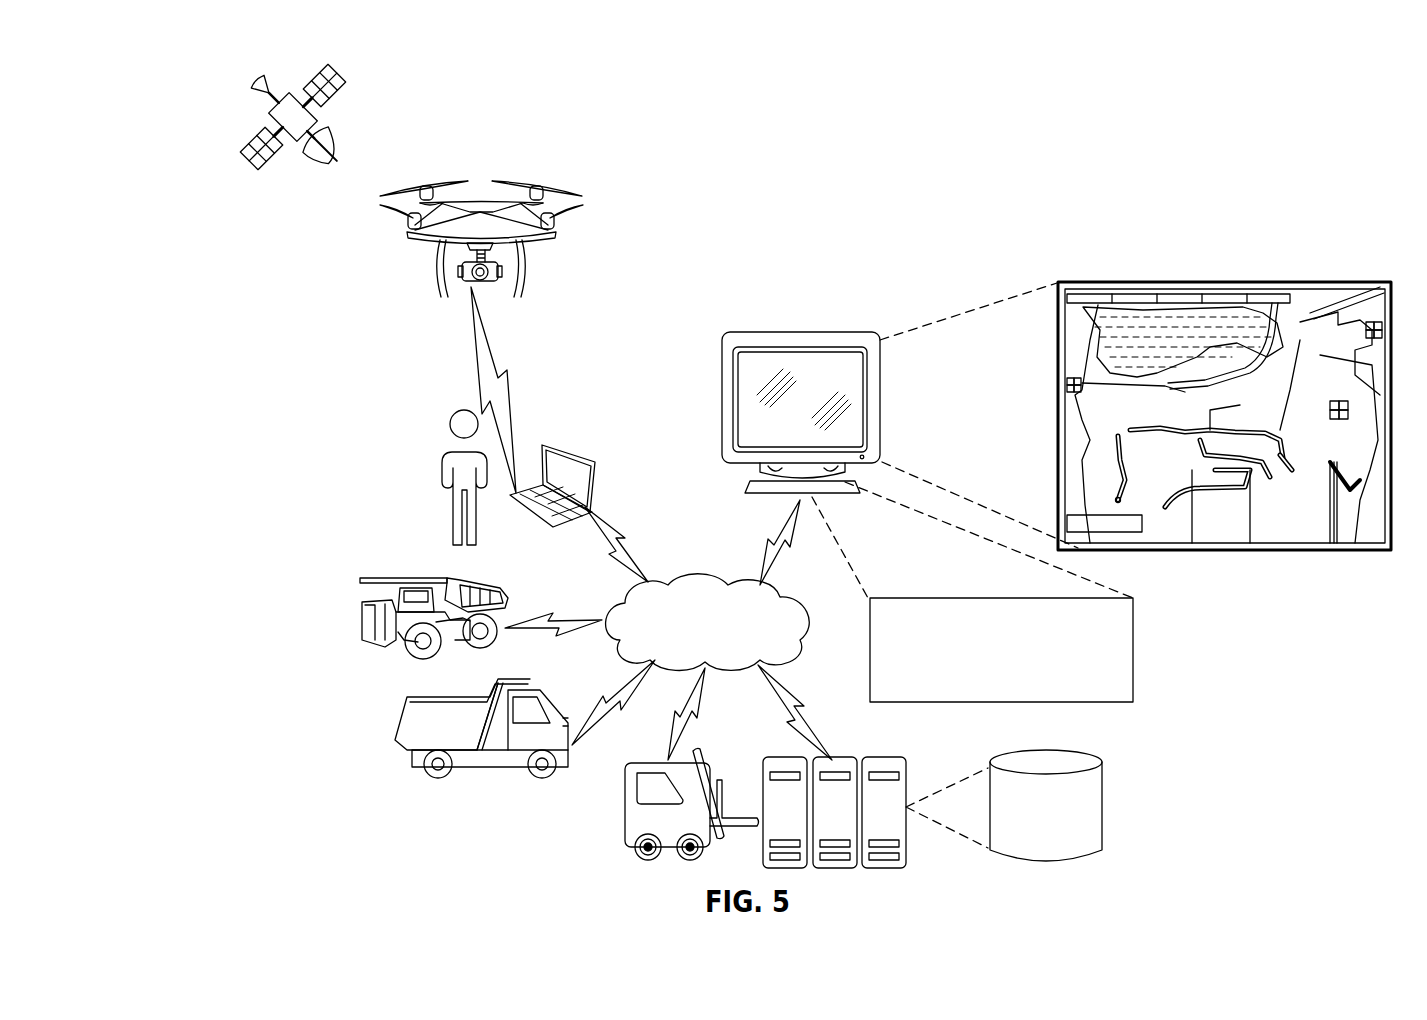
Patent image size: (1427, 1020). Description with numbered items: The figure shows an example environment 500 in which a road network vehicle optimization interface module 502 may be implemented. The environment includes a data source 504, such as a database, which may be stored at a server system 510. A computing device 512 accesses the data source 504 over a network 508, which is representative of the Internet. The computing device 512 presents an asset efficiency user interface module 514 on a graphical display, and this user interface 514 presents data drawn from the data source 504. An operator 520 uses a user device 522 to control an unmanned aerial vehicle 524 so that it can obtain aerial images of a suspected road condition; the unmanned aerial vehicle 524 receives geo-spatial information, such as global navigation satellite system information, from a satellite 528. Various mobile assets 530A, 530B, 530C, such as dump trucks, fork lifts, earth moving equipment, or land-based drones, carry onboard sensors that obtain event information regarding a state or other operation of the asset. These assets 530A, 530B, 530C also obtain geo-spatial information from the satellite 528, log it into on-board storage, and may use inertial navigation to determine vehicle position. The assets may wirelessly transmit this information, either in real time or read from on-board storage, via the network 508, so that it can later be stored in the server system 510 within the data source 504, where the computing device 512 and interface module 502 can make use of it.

The example environment 500 is at (156, 58).
The road network vehicle optimization interface module 502 is at (1135, 650).
The data source 504 is at (1103, 808).
The network 508 is at (800, 652).
The server system 510 is at (905, 765).
The computing device 512 is at (785, 357).
The asset efficiency user interface module 514 is at (1172, 325).
The operator 520 is at (441, 465).
The user device 522 is at (567, 452).
The unmanned aerial vehicle 524 is at (472, 208).
The satellite 528 is at (242, 155).
The mobile asset 530A is at (367, 579).
The mobile asset 530B is at (407, 740).
The mobile asset 530C is at (628, 820).